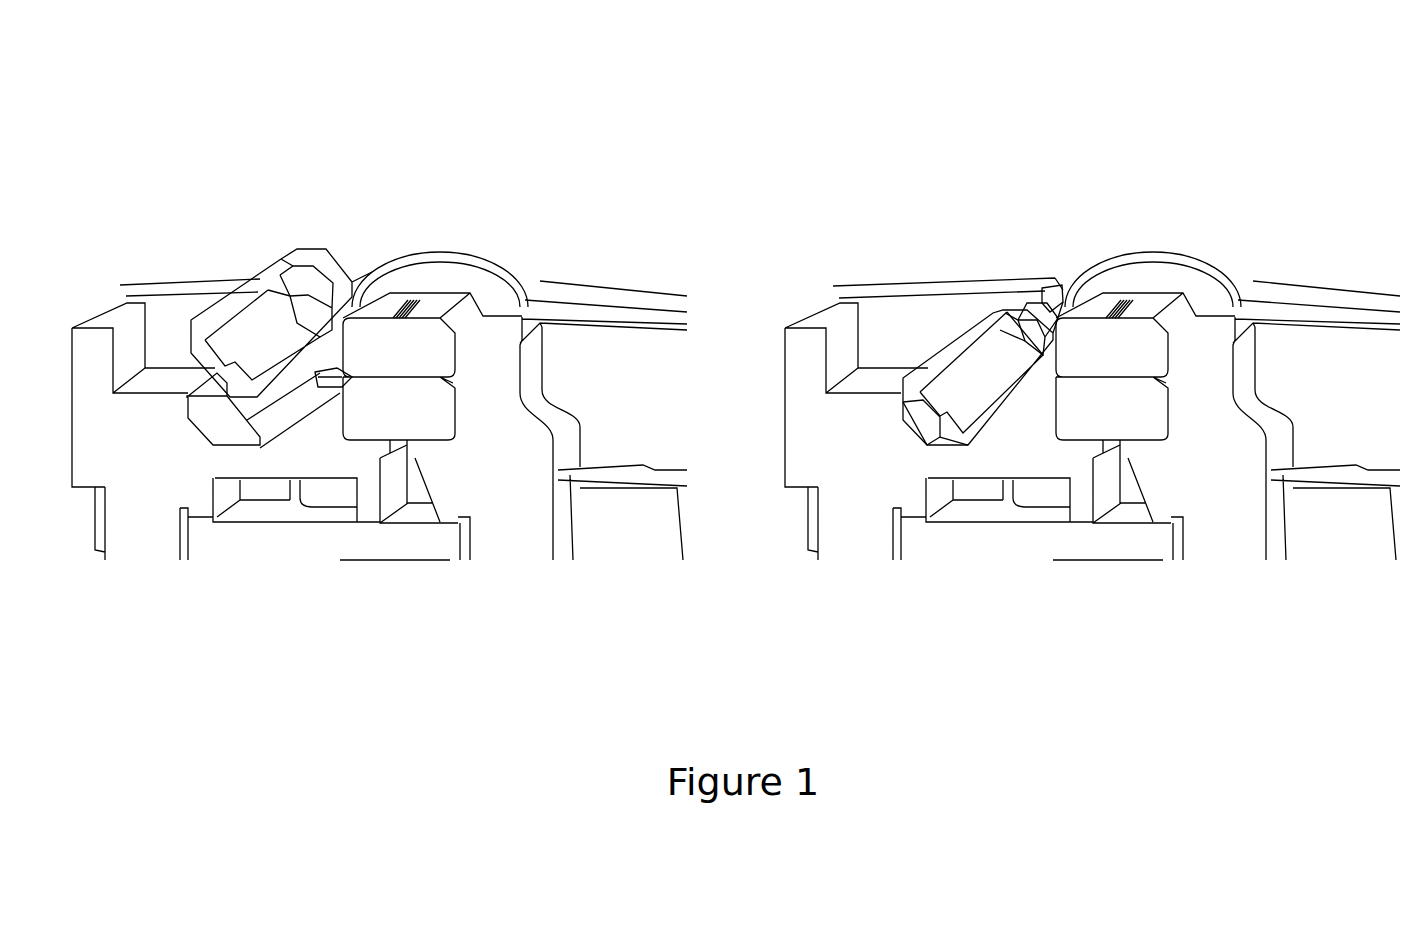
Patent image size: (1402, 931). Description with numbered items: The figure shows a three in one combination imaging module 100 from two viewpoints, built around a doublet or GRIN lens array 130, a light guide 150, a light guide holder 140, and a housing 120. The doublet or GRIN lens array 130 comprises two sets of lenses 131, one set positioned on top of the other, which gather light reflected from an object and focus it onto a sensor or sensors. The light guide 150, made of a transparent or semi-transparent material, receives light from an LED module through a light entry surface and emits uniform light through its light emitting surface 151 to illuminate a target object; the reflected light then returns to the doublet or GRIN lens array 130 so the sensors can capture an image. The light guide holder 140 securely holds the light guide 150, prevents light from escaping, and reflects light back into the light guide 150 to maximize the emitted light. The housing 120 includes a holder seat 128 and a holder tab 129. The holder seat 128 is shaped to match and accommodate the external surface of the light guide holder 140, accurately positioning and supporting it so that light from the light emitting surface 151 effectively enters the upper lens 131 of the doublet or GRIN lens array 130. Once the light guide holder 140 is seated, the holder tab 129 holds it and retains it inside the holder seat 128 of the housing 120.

The three in one combination imaging module 100 is at (619, 222).
The housing 120 is at (128, 342).
The holder seat 128 is at (213, 428).
The holder tab 129 is at (323, 385).
The doublet or GRIN lens array 130 is at (1142, 342).
The lenses 131 is at (1113, 318).
The light guide holder 140 is at (264, 290).
The light guide 150 is at (287, 322).
The light emitting surface 151 is at (1015, 347).